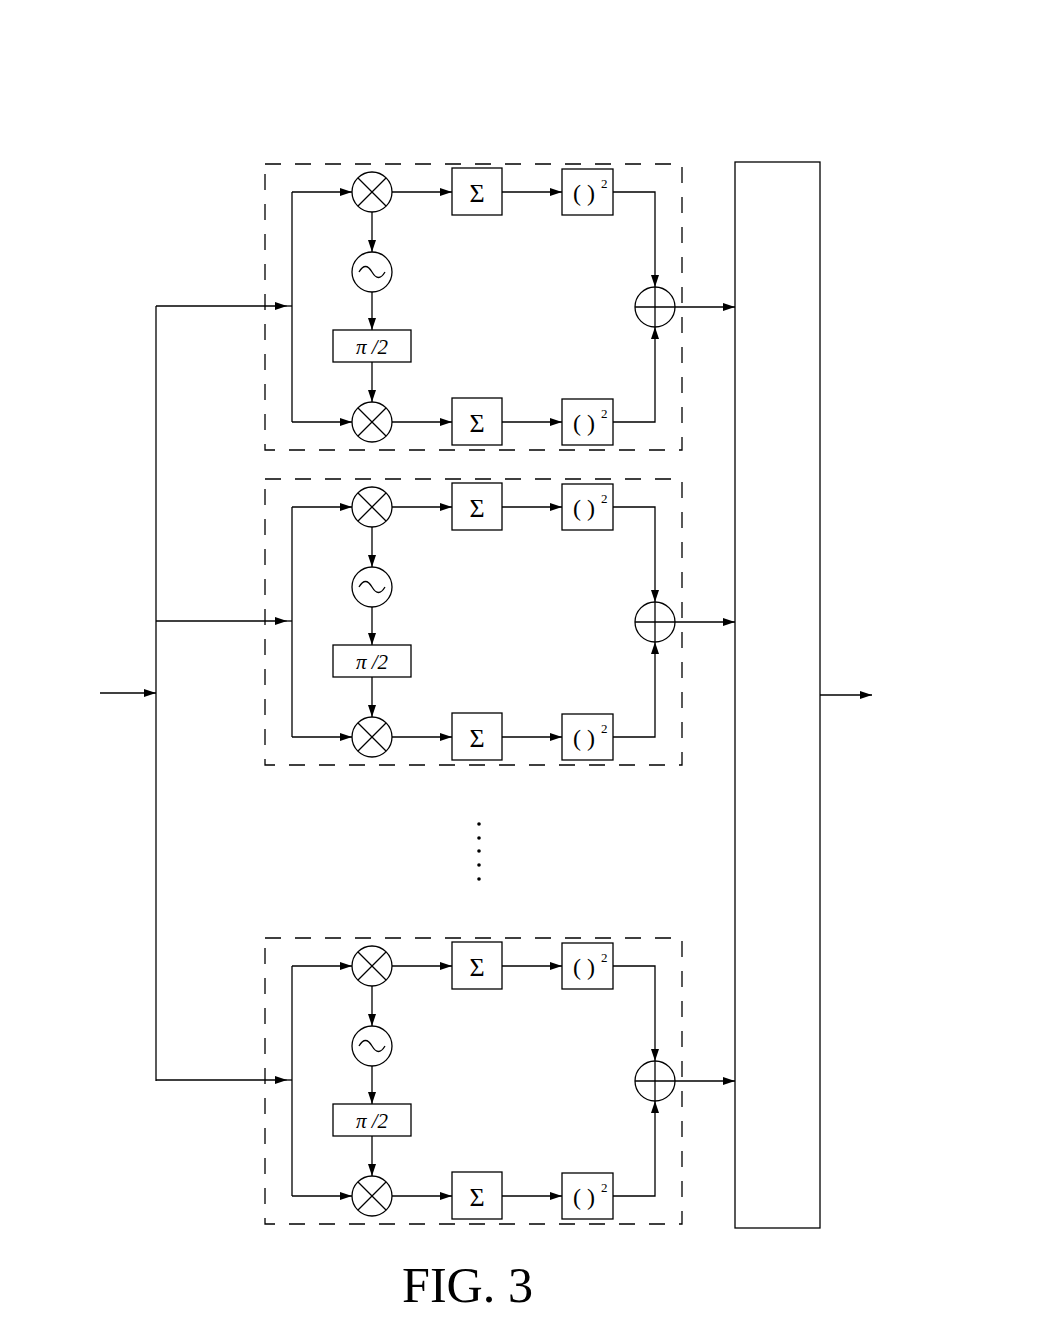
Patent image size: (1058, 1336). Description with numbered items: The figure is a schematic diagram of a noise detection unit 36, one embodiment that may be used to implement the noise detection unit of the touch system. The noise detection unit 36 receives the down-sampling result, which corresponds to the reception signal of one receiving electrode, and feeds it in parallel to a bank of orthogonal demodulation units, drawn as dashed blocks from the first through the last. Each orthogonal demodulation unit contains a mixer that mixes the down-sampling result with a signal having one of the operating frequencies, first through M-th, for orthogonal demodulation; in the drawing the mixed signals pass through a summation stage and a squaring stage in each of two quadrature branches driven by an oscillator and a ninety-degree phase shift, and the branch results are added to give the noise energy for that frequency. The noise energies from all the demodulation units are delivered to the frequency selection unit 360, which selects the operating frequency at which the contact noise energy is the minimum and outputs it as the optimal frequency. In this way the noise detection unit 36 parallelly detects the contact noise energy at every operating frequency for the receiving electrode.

The noise detection unit 36 is at (190, 70).
The frequency selection unit 360 is at (787, 161).